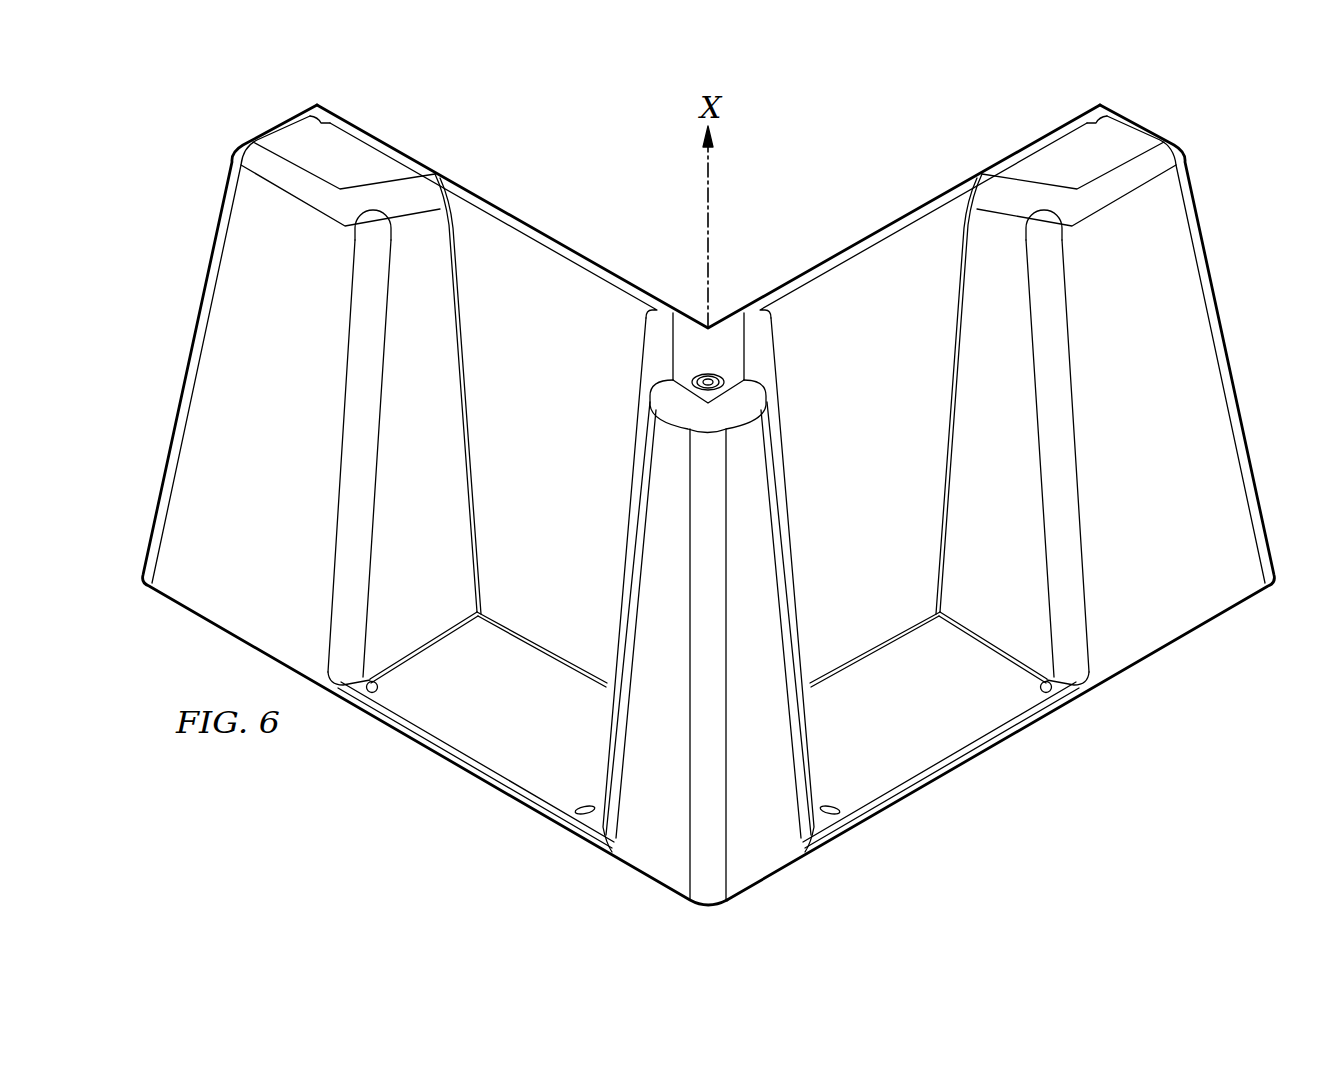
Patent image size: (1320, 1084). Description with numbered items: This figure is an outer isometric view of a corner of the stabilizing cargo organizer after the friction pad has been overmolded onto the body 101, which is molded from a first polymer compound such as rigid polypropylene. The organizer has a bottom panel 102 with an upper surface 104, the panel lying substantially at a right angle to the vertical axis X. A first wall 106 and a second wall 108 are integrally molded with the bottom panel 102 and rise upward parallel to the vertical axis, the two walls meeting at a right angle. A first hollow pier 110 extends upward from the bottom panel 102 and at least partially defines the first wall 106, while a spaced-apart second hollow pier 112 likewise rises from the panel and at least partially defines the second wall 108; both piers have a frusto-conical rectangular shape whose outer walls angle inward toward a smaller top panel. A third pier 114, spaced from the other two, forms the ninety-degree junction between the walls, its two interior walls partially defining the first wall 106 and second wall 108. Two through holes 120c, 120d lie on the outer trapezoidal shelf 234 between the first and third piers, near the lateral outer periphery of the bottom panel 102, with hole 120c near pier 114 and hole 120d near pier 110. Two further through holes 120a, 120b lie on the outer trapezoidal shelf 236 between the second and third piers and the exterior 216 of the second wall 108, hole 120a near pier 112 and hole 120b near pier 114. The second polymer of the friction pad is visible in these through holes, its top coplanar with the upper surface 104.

The body 101 is at (768, 827).
The bottom panel 102 is at (952, 732).
The upper surface 104 is at (528, 702).
The first wall 106 is at (884, 416).
The second wall 108 is at (565, 421).
The first hollow pier 110 is at (1165, 377).
The second hollow pier 112 is at (292, 382).
The third pier 114 is at (780, 767).
The through hole 120a is at (378, 684).
The through hole 120b is at (570, 807).
The through hole 120c is at (850, 806).
The through hole 120d is at (1038, 690).
The exterior of the second wall 216 is at (553, 511).
The outer trapezoidal shelf 234 is at (903, 762).
The outer trapezoidal shelf 236 is at (487, 744).